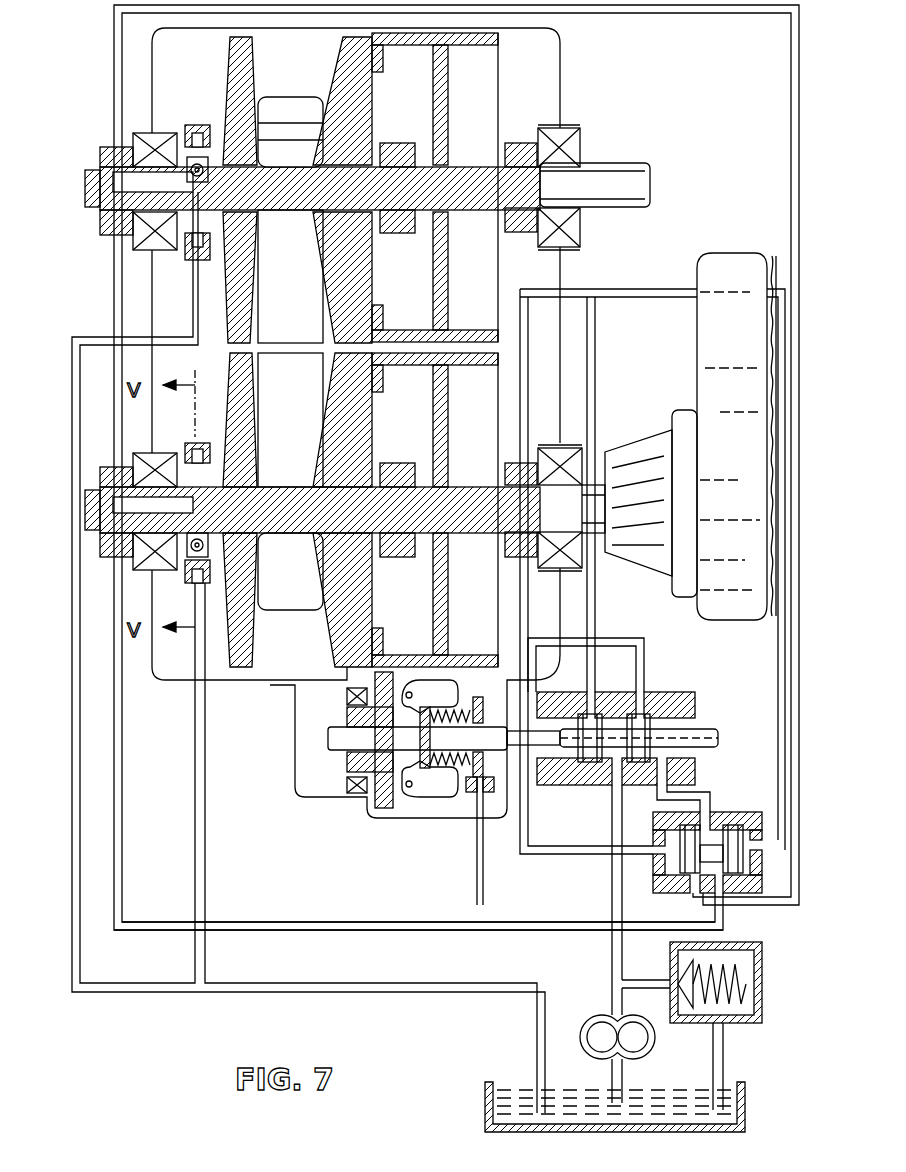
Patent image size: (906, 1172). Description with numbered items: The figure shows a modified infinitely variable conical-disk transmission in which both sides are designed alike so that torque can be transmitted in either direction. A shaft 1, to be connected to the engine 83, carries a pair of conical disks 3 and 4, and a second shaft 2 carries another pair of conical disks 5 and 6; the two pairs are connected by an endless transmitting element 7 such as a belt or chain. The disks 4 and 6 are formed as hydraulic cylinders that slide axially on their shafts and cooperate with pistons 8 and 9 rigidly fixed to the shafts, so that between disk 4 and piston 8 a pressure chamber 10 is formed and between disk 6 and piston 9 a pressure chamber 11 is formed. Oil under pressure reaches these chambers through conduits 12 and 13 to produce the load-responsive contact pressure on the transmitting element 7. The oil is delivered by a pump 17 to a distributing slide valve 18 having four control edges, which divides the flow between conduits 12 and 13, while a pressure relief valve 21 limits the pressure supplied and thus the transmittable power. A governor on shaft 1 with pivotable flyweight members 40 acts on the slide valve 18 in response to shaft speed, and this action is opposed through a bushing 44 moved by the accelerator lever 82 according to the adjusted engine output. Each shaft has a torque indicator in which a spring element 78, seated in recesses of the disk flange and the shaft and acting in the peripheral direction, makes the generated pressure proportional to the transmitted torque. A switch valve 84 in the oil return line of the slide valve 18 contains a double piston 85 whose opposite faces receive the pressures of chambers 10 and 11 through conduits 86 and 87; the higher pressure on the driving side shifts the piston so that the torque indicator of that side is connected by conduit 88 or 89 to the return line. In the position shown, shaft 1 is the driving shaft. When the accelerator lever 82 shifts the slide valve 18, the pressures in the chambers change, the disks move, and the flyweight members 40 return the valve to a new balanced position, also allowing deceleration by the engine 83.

The shaft 1 is at (565, 500).
The second shaft 2 is at (608, 180).
The conical disk 3 is at (245, 652).
The conical disk 4 is at (357, 650).
The conical disk 5 is at (243, 66).
The conical disk 6 is at (350, 90).
The endless transmitting element 7 is at (285, 600).
The piston 8 is at (443, 380).
The piston 9 is at (445, 118).
The pressure chamber 10 is at (415, 397).
The pressure chamber 11 is at (415, 93).
The conduit 12 is at (644, 655).
The conduit 13 is at (593, 393).
The pump 17 is at (637, 1038).
The distributing slide valve 18 is at (693, 698).
The pressure relief valve 21 is at (760, 1023).
The flyweight members 40 is at (425, 798).
The bushing 44 is at (472, 775).
The spring element 78 is at (183, 133).
The accelerator lever 82 is at (477, 858).
The engine 83 is at (725, 272).
The switch valve 84 is at (755, 822).
The double piston 85 is at (708, 847).
The conduit 86 is at (548, 853).
The conduit 87 is at (778, 700).
The conduit 88 is at (325, 920).
The conduit 89 is at (791, 163).